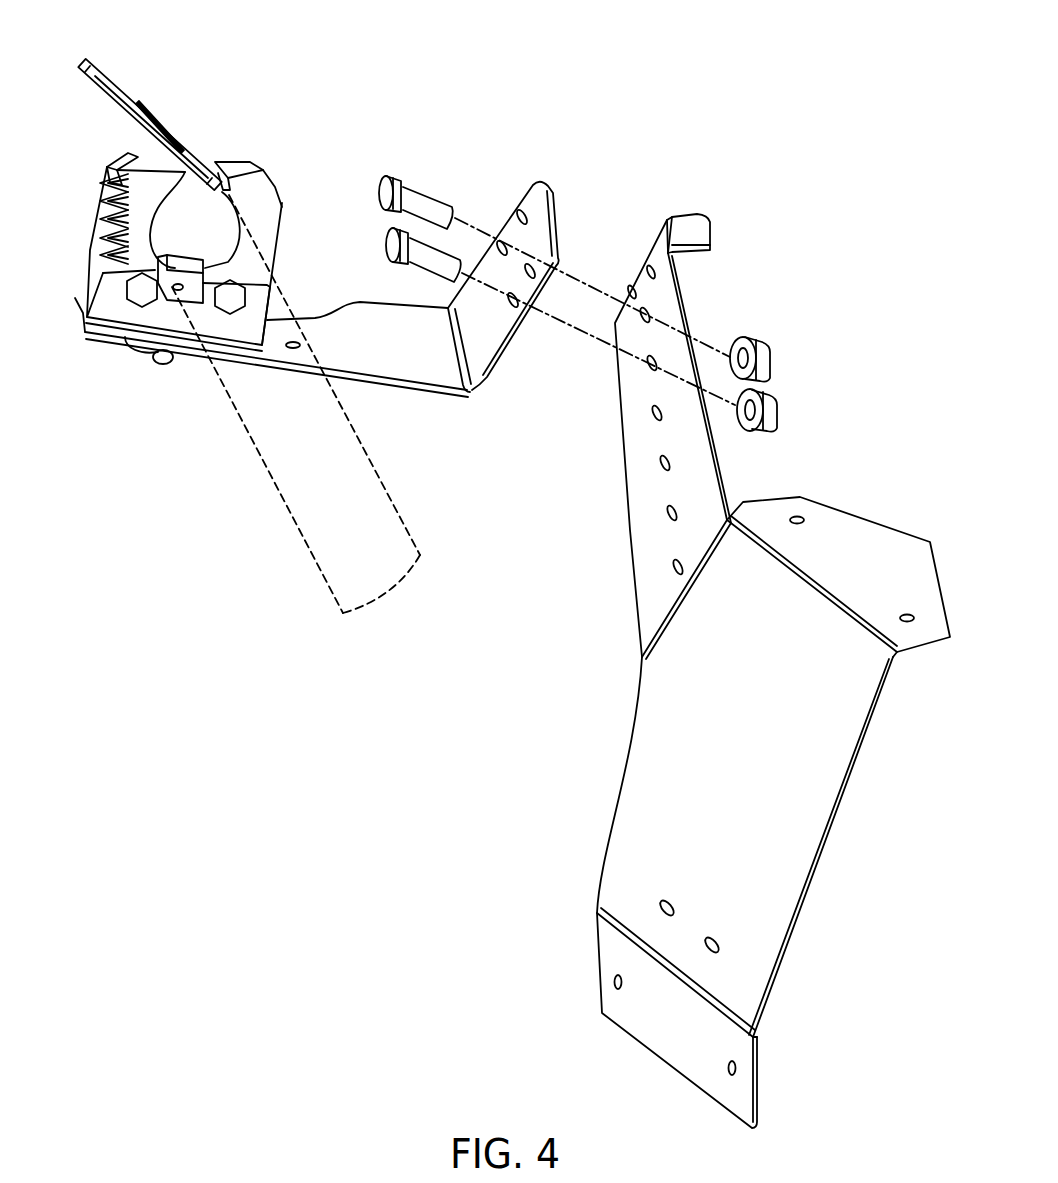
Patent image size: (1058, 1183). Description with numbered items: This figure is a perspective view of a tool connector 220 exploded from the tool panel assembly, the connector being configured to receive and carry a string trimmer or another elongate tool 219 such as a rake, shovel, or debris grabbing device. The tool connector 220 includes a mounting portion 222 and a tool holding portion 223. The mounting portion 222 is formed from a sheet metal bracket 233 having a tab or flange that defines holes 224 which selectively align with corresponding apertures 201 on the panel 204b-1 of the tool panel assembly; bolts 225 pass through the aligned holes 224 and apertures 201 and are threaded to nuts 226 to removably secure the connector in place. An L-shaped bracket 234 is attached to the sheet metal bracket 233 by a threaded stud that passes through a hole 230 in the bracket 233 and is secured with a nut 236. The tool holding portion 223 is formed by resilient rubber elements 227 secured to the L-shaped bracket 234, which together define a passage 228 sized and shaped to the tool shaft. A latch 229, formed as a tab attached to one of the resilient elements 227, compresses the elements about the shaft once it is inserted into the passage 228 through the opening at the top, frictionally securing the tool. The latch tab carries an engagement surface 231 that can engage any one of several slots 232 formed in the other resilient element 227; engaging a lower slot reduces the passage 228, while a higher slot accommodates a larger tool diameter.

The apertures 201 is at (642, 323).
The panel 204b-1 is at (627, 503).
The elongate tool 219 is at (290, 512).
The tool connector 220 is at (330, 315).
The mounting portion 222 is at (490, 378).
The tool holding portion 223 is at (201, 236).
The holes 224 is at (507, 233).
The bolts 225 is at (403, 225).
The nuts 226 is at (782, 358).
The resilient elements 227 is at (130, 147).
The passage 228 is at (195, 225).
The latch 229 is at (149, 98).
The hole 230 is at (293, 350).
The engagement surface 231 is at (143, 106).
The slots 232 is at (92, 222).
The sheet metal bracket 233 is at (437, 393).
The L-shaped bracket 234 is at (268, 310).
The nut 236 is at (167, 364).